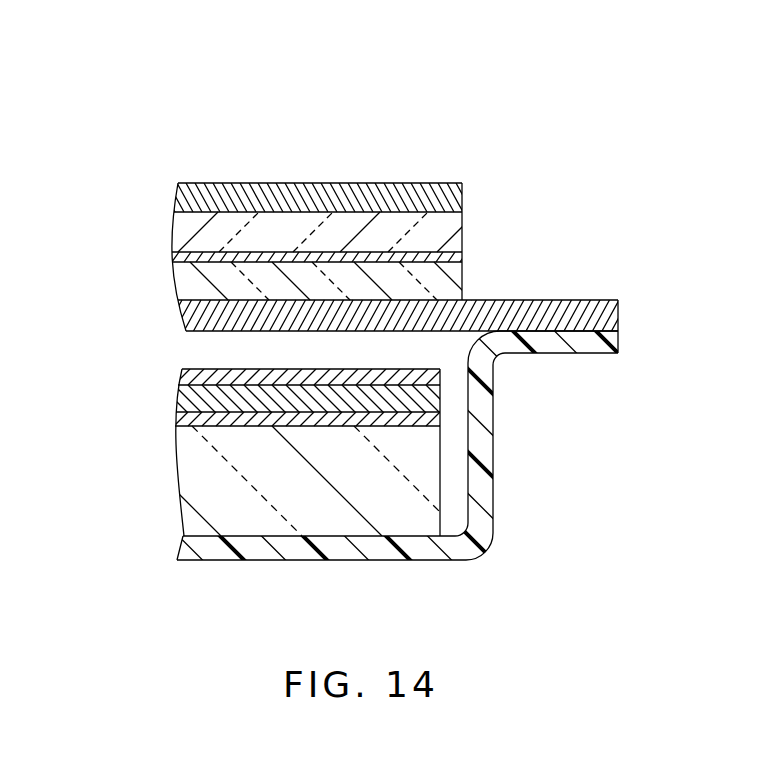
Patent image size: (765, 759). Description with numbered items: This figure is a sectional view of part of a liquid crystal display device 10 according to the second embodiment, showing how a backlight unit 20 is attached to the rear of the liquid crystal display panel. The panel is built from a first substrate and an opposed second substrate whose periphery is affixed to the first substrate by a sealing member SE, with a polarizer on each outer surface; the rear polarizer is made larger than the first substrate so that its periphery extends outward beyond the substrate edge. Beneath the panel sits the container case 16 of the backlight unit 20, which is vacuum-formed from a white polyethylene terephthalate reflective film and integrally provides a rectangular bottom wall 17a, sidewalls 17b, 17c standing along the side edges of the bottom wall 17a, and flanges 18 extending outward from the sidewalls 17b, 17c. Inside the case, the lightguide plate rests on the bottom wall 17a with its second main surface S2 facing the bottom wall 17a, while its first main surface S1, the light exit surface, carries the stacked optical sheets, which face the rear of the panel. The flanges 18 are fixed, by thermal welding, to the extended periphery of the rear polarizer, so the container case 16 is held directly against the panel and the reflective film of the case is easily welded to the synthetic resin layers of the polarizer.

The display panel module 10 is at (363, 202).
The sealing member SE is at (381, 250).
The flange 18 is at (551, 355).
The sidewall 17b is at (543, 443).
The sidewall 17c is at (494, 462).
The bottom wall 17a is at (345, 562).
The container case 16 is at (382, 480).
The backlight unit 20 is at (382, 480).
The first main surface S1 is at (393, 426).
The second main surface S2 is at (207, 540).